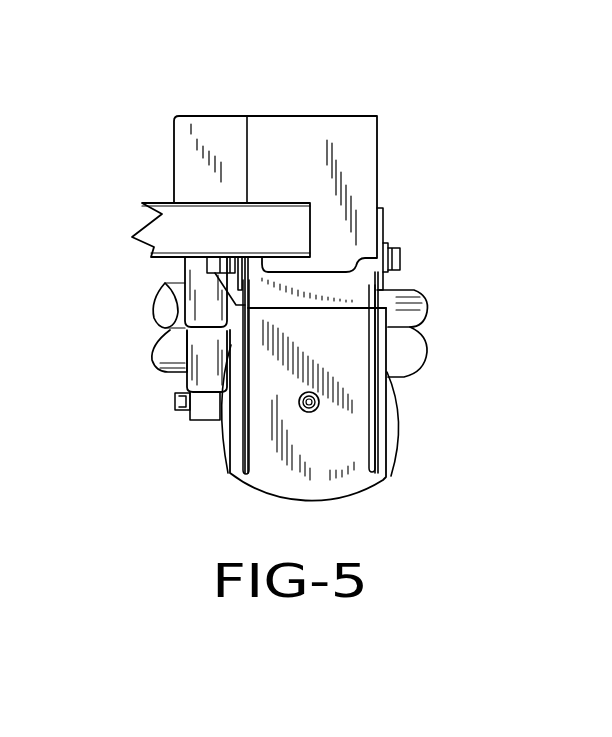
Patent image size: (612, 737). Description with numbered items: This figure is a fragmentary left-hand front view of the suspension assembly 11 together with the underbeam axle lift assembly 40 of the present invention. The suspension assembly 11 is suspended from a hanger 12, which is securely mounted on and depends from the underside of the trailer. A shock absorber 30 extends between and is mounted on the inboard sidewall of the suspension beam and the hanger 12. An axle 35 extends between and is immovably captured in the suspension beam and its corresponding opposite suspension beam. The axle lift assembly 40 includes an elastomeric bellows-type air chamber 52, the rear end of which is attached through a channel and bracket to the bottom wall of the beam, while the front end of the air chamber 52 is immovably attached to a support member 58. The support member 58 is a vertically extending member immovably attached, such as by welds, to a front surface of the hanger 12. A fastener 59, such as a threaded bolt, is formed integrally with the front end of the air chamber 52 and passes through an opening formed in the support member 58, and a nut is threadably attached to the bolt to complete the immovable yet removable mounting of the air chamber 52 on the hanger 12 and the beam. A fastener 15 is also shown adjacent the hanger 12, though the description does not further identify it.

The suspension assembly 11 is at (288, 94).
The hanger 12 is at (378, 176).
The fastener nut 15 is at (400, 258).
The shock absorber 30 is at (203, 283).
The axle 35 is at (412, 353).
The axle lift assembly 40 is at (216, 465).
The air chamber 52 is at (382, 407).
The support member 58 is at (347, 468).
The fastener 59 is at (305, 411).